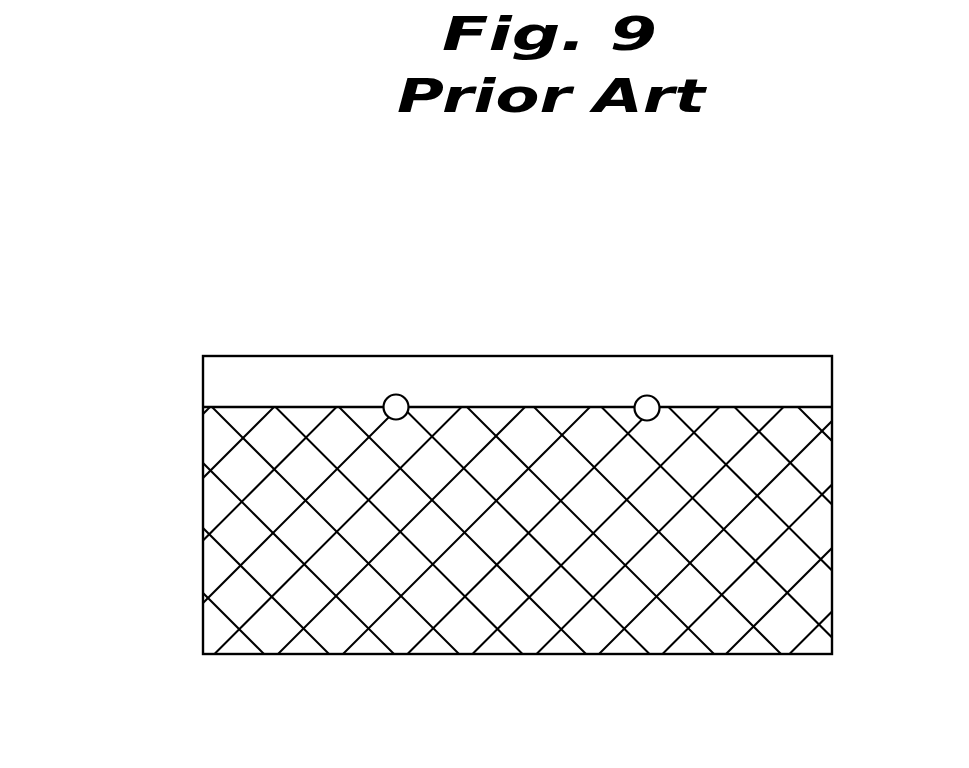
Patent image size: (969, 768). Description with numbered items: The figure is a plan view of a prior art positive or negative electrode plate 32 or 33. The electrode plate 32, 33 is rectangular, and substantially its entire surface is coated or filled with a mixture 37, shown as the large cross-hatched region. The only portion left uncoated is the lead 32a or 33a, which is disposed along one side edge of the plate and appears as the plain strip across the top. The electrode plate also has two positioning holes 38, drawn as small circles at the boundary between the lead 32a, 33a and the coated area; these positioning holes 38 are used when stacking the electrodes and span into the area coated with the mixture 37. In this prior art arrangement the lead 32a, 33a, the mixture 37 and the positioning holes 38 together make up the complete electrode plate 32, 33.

The positive electrode plate 32 is at (484, 512).
The negative electrode plate 33 is at (484, 512).
The lead 32a is at (517, 333).
The lead 33a is at (522, 392).
The mixture 37 is at (547, 567).
The positioning holes 38 is at (395, 410).